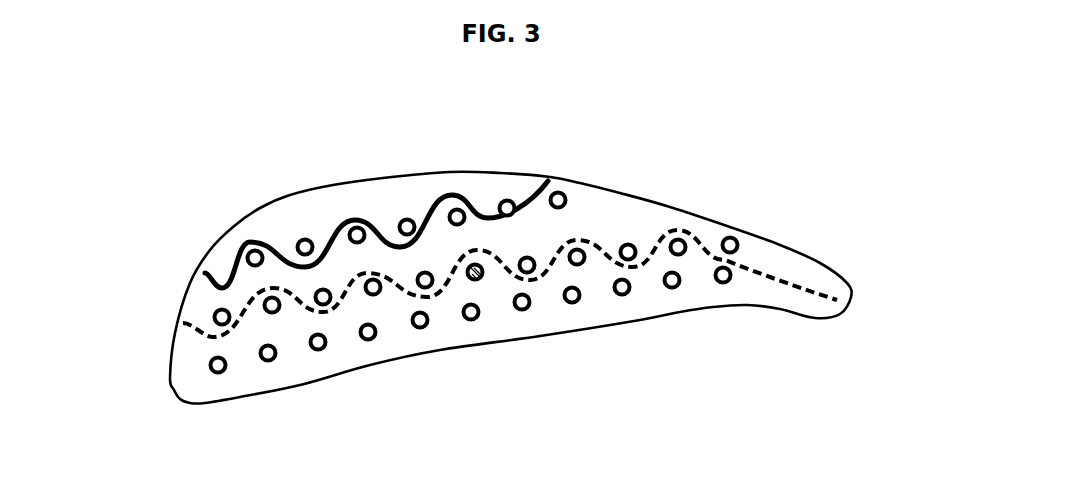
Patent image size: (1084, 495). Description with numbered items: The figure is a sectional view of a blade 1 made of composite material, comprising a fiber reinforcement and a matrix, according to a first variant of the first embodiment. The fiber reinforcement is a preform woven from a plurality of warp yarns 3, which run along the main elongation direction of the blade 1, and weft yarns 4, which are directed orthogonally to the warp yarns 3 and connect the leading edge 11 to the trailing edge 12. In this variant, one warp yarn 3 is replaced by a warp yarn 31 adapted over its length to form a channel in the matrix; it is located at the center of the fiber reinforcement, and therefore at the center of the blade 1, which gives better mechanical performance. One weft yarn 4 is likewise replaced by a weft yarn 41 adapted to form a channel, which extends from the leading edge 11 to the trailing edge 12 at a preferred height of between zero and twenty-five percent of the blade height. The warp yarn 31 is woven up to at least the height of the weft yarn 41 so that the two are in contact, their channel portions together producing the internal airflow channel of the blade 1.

The blade 1 is at (588, 131).
The warp yarns 3 is at (257, 249).
The weft yarns 4 is at (450, 192).
The leading edge 11 is at (180, 400).
The trailing edge 12 is at (848, 314).
The warp yarn adapted to form a channel 31 is at (482, 277).
The weft yarn adapted to form a channel 41 is at (757, 268).